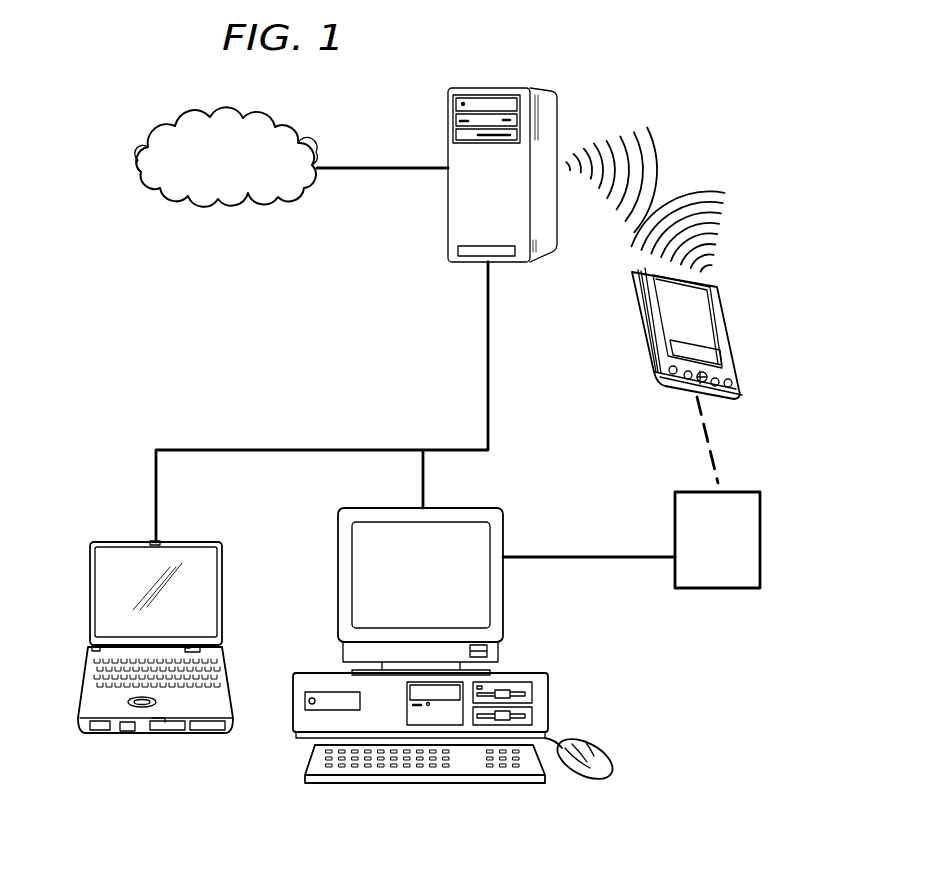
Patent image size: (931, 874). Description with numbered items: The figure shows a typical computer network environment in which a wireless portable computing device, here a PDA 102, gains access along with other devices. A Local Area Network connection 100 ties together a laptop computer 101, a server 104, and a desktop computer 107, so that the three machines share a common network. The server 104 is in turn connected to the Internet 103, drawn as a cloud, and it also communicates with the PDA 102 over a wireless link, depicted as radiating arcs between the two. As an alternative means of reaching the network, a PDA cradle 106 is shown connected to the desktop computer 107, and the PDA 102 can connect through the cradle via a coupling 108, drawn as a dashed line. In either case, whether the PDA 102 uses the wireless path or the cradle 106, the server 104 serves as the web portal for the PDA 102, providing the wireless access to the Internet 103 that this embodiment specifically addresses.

The Local Area Network (LAN) connection 100 is at (300, 449).
The laptop computer 101 is at (90, 578).
The PDA 102 is at (645, 326).
The Internet 103 is at (138, 158).
The server 104 is at (493, 88).
The PDA cradle 106 is at (723, 580).
The desktop computer 107 is at (338, 578).
The coupling 108 is at (713, 445).